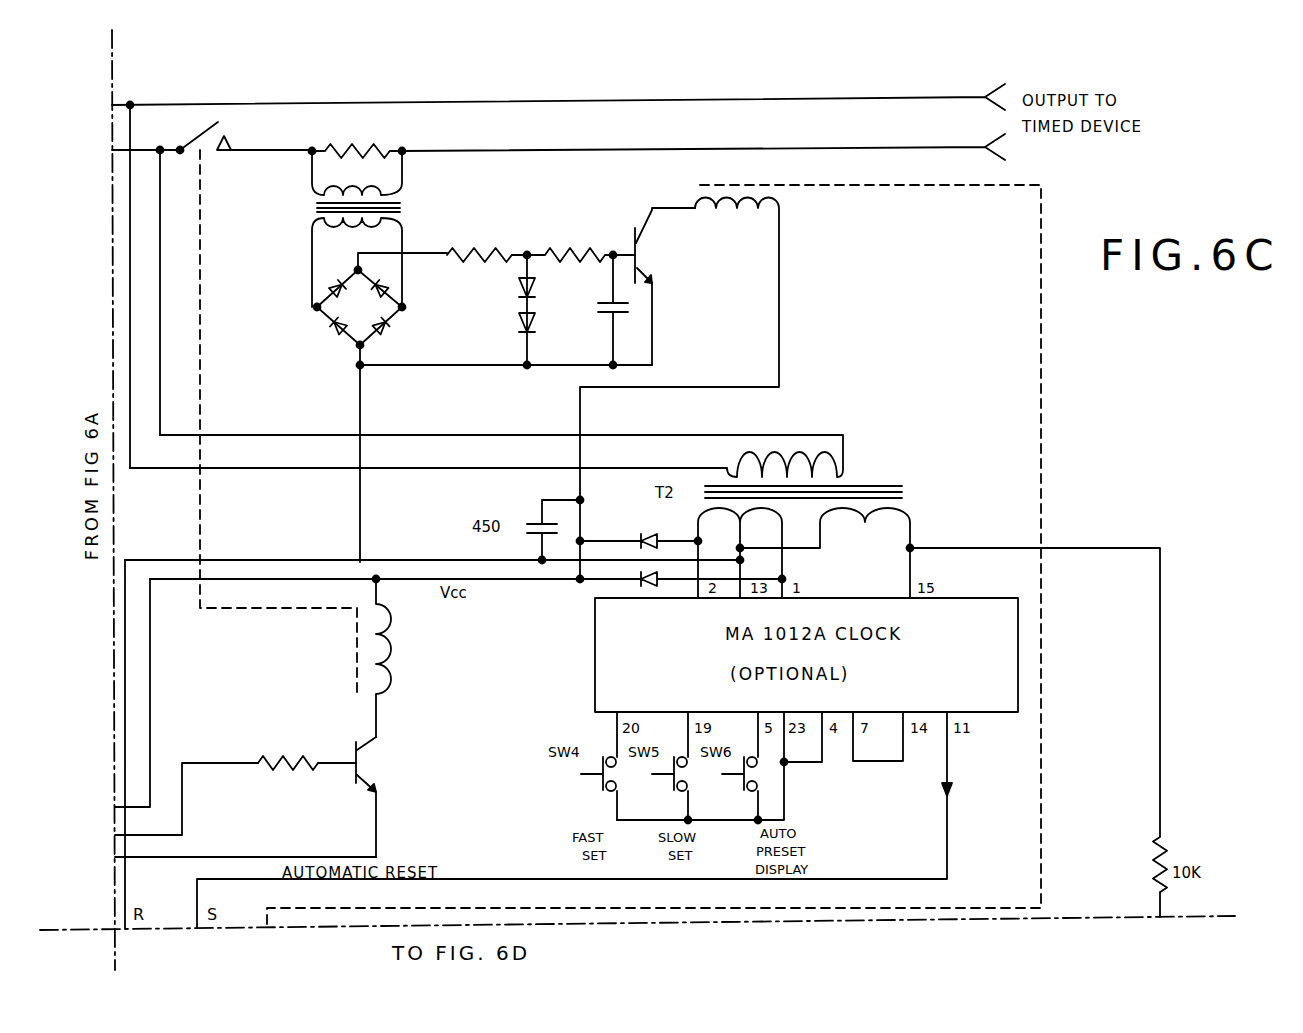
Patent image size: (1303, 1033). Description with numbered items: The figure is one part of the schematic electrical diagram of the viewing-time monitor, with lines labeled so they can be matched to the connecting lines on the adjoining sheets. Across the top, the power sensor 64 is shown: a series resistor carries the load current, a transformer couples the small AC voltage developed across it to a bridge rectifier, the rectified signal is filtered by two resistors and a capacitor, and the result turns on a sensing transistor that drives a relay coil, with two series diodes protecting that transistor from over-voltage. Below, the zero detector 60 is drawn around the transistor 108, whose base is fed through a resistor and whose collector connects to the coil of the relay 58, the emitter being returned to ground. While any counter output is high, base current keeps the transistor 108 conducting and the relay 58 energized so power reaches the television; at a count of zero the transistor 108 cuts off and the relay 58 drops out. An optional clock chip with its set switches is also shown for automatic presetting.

The power sensor 64 is at (805, 83).
The relay 58 is at (392, 656).
The zero detector 60 is at (366, 785).
The transistor 108 is at (348, 784).